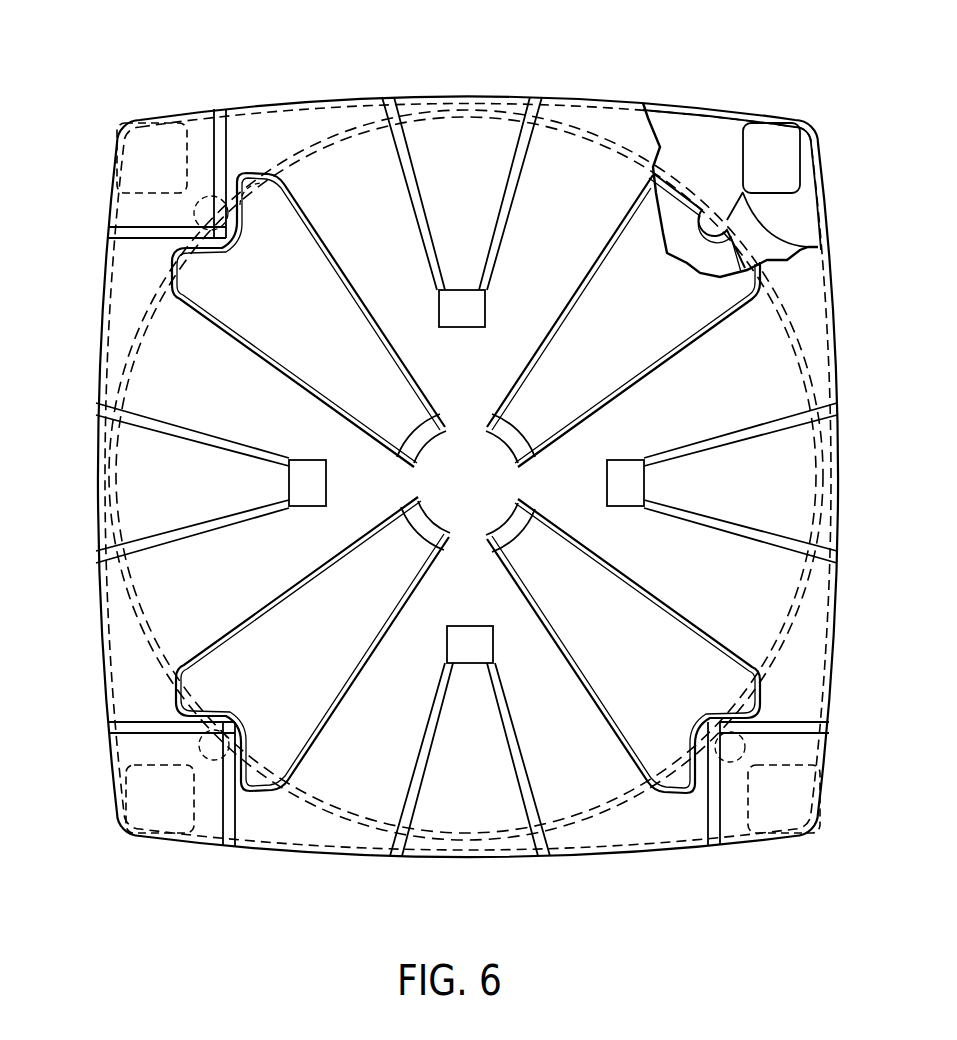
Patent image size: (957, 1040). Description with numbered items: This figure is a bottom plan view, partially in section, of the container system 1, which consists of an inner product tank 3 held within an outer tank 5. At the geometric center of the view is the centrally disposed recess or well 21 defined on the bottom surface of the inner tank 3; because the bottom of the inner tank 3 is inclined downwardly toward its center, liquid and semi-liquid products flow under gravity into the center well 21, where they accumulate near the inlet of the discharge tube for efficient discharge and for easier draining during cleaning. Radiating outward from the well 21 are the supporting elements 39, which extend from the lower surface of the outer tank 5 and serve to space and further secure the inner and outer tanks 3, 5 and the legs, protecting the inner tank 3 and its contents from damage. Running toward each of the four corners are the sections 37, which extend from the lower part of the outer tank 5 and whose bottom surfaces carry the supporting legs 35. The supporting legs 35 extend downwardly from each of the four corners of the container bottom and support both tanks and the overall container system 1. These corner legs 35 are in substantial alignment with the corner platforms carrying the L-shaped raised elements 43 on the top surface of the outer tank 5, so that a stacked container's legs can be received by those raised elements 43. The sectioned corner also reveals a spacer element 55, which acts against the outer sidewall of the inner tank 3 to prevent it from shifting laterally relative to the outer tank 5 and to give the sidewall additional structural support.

The container system 1 is at (648, 90).
The inner tank 3 is at (820, 423).
The outer tank 5 is at (838, 477).
The center well 21 is at (480, 502).
The supporting legs 35 is at (162, 240).
The section 37 is at (320, 242).
The supporting elements 39 is at (510, 207).
The raised elements 43 is at (160, 197).
The spacer elements 55 is at (820, 247).